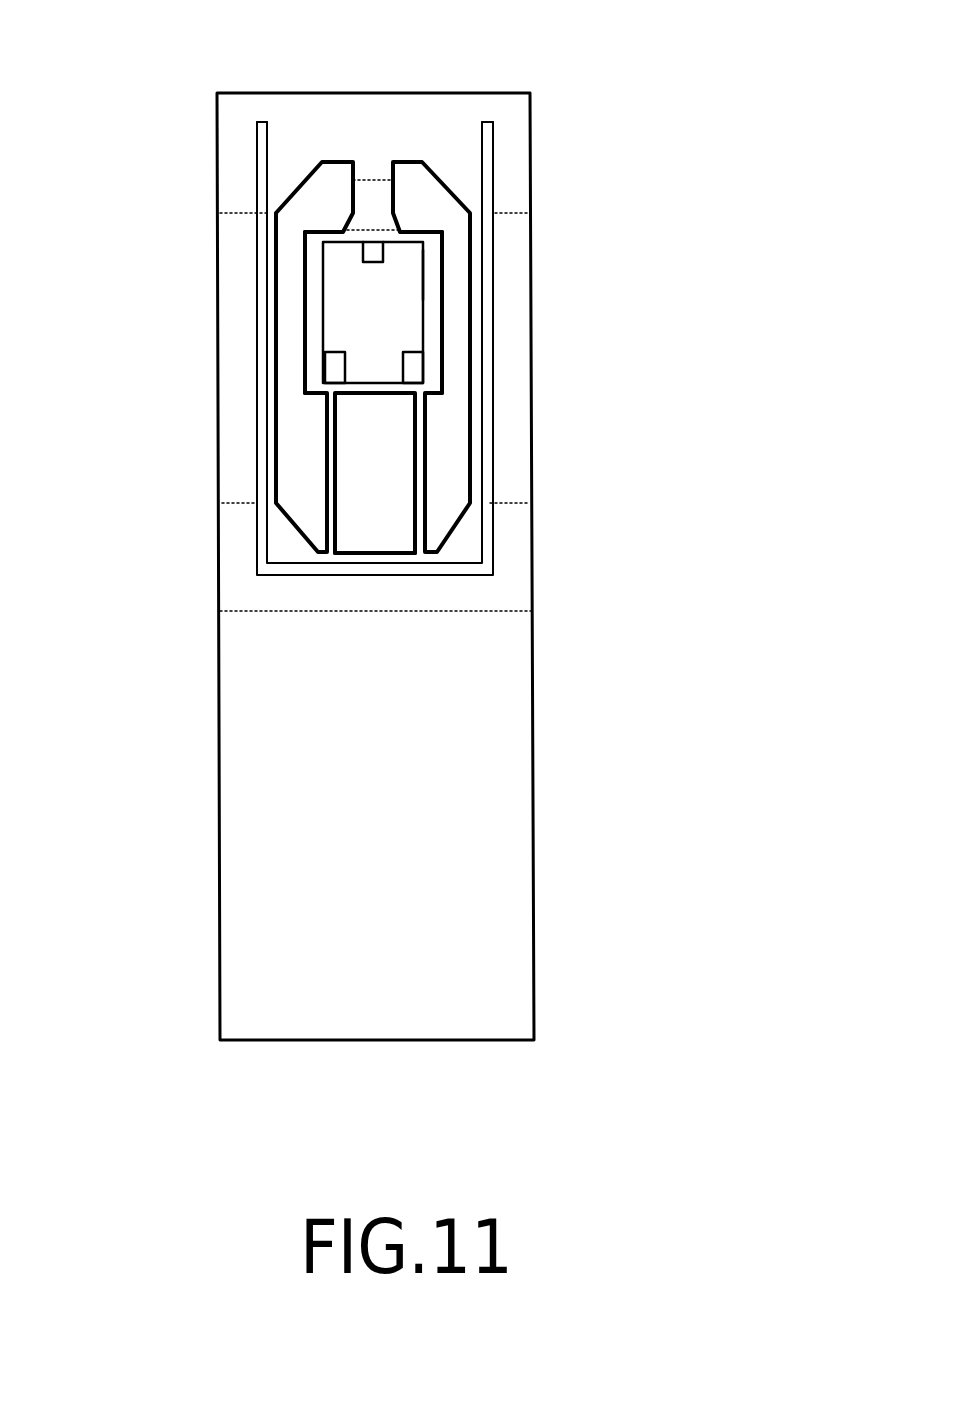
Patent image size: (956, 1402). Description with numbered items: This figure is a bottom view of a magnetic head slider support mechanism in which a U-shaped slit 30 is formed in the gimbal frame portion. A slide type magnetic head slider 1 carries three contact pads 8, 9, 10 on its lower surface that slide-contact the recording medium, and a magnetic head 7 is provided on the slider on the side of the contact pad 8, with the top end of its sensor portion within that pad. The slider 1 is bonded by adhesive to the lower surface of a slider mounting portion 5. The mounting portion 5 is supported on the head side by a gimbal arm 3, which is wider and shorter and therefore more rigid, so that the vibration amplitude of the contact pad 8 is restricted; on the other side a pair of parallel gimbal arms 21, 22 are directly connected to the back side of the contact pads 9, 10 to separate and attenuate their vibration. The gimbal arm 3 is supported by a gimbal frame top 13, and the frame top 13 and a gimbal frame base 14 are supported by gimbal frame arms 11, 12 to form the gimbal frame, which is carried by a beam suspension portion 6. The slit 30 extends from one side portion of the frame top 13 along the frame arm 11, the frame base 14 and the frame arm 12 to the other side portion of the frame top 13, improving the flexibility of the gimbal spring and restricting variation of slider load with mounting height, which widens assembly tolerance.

The slide type magnetic head slider 1 is at (367, 307).
The gimbal arm 3 is at (383, 213).
The slider mounting portion 5 is at (320, 259).
The beam suspension portion 6 is at (385, 815).
The magnetic head 7 is at (372, 232).
The contact pad 8 is at (430, 260).
The contact pad 9 is at (347, 353).
The contact pad 10 is at (425, 368).
The gimbal frame arm 11 is at (512, 423).
The gimbal frame arm 12 is at (238, 440).
The gimbal frame top 13 is at (378, 157).
The gimbal frame base 14 is at (338, 592).
The gimbal arm 21 is at (420, 458).
The gimbal arm 22 is at (332, 532).
The U-shaped slit 30 is at (253, 570).